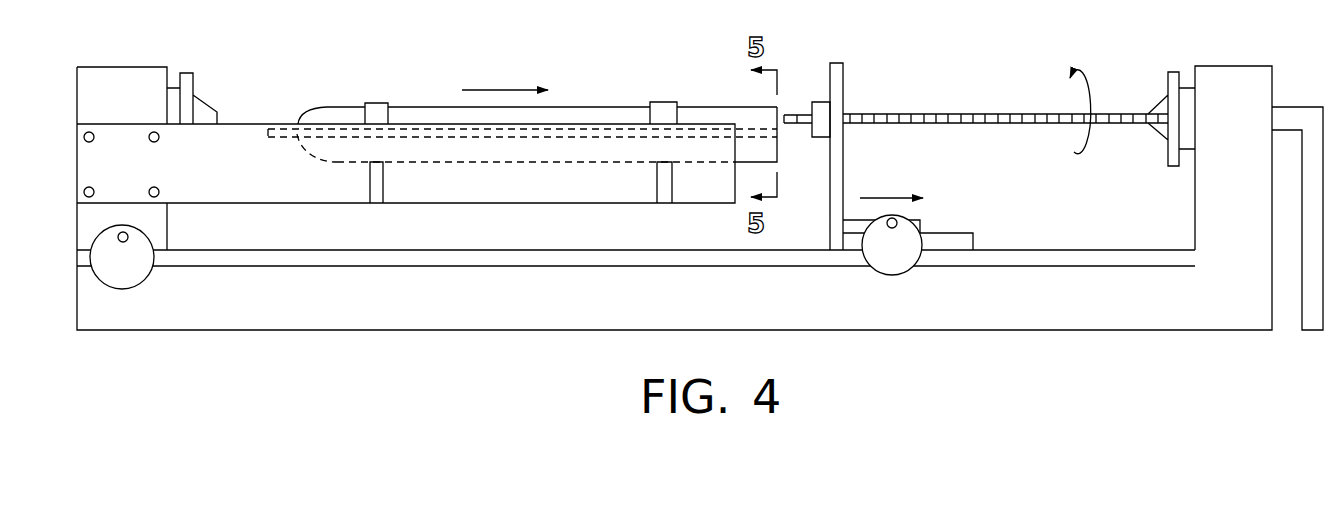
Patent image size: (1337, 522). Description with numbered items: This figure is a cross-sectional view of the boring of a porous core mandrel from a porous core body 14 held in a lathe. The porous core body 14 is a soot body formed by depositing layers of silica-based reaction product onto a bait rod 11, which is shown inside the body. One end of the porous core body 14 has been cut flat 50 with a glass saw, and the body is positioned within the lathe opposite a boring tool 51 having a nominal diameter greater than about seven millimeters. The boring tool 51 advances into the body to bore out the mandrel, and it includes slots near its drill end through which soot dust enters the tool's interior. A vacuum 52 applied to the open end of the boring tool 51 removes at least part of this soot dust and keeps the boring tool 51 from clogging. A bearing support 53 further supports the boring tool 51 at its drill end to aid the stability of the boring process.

The bait rod 11 is at (432, 128).
The porous core body 14 is at (597, 107).
The flat cut end 50 is at (778, 152).
The boring tool 51 is at (950, 113).
The vacuum 52 is at (1313, 333).
The bearing support 53 is at (818, 100).